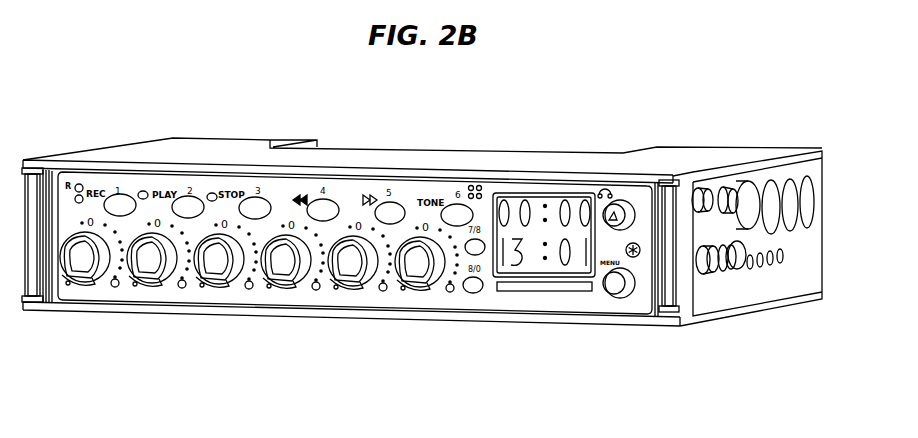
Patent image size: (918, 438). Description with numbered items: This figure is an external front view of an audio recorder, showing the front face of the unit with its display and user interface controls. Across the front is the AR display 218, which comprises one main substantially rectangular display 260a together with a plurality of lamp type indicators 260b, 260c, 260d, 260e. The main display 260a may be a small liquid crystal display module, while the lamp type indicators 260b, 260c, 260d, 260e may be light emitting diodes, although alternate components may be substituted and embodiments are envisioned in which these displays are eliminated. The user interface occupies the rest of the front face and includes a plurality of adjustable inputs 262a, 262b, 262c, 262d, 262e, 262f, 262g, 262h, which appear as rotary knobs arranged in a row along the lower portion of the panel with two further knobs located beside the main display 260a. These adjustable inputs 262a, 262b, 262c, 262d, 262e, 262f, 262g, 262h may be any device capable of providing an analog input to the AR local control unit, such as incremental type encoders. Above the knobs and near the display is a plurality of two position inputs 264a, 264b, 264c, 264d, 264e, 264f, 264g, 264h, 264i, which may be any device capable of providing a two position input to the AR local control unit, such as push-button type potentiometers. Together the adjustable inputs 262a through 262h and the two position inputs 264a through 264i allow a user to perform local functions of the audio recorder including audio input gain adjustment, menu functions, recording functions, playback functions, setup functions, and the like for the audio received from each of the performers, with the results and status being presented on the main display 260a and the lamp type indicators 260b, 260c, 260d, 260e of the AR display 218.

The AR display 218 is at (258, 298).
The main substantially rectangular display 260a is at (538, 194).
The lamp type indicator 260b is at (80, 184).
The lamp type indicator 260c is at (70, 188).
The lamp type indicator 260d is at (143, 191).
The lamp type indicator 260e is at (212, 193).
The adjustable input 262a is at (85, 284).
The adjustable input 262b is at (152, 285).
The adjustable input 262c is at (219, 286).
The adjustable input 262d is at (286, 287).
The adjustable input 262e is at (353, 288).
The adjustable input 262f is at (420, 289).
The adjustable input 262g is at (617, 200).
The adjustable input 262h is at (616, 298).
The two position input 264a is at (120, 194).
The two position input 264b is at (190, 196).
The two position input 264c is at (257, 197).
The two position input 264d is at (319, 199).
The two position input 264e is at (390, 202).
The two position input 264f is at (457, 204).
The two position input 264g is at (484, 254).
The two position input 264h is at (473, 294).
The two position input 264i is at (642, 258).